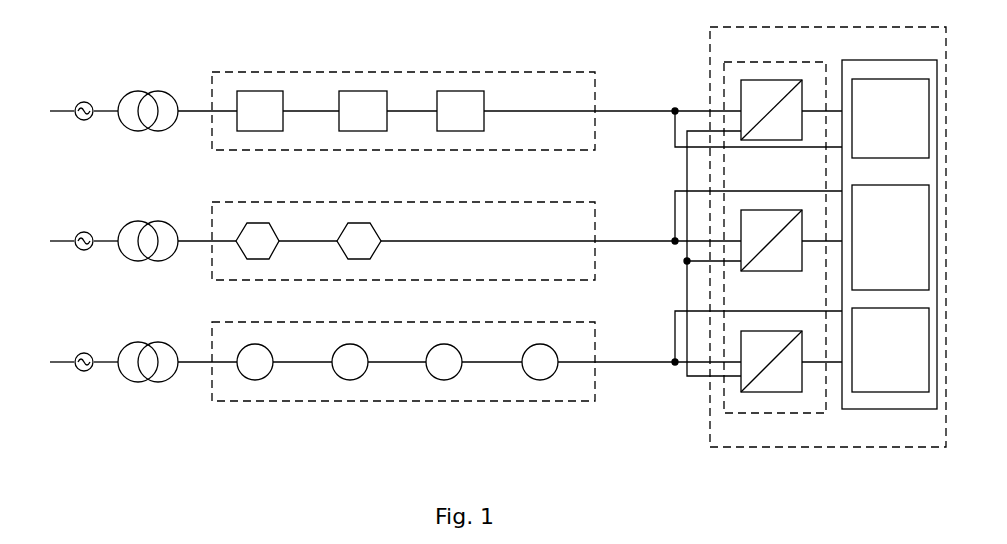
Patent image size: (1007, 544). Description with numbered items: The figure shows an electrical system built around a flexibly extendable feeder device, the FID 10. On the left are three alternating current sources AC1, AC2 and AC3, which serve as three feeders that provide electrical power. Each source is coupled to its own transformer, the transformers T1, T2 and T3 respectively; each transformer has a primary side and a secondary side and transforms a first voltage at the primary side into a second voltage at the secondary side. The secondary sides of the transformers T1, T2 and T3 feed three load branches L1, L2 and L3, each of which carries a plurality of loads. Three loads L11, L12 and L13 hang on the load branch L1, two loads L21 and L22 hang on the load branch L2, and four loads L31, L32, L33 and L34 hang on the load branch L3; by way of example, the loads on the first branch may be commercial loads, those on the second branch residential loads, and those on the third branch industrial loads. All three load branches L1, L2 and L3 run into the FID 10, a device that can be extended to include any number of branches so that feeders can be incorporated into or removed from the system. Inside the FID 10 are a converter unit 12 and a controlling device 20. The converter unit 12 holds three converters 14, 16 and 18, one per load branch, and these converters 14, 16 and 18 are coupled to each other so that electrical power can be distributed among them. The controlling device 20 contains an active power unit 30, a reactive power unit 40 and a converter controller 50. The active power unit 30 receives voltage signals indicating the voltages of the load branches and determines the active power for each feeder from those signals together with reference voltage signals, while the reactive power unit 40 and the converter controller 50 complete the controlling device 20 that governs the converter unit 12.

The alternating current source AC1 is at (81, 99).
The alternating current source AC2 is at (81, 229).
The alternating current source AC3 is at (81, 350).
The transformer T1 is at (161, 93).
The transformer T2 is at (161, 224).
The transformer T3 is at (163, 347).
The load branch L1 is at (532, 79).
The load L11 is at (253, 98).
The load L12 is at (344, 100).
The load L13 is at (443, 100).
The load branch L2 is at (524, 203).
The load L21 is at (257, 233).
The load L22 is at (352, 235).
The load branch L3 is at (575, 322).
The load L31 is at (255, 350).
The load L32 is at (341, 352).
The load L33 is at (437, 352).
The load L34 is at (535, 352).
The FID 10 is at (718, 30).
The converter unit 12 is at (791, 65).
The converter 14 is at (776, 90).
The converter 16 is at (776, 220).
The converter 18 is at (779, 343).
The controlling device 20 is at (897, 72).
The active power unit 30 is at (888, 90).
The reactive power unit 40 is at (897, 196).
The converter controller 50 is at (902, 321).